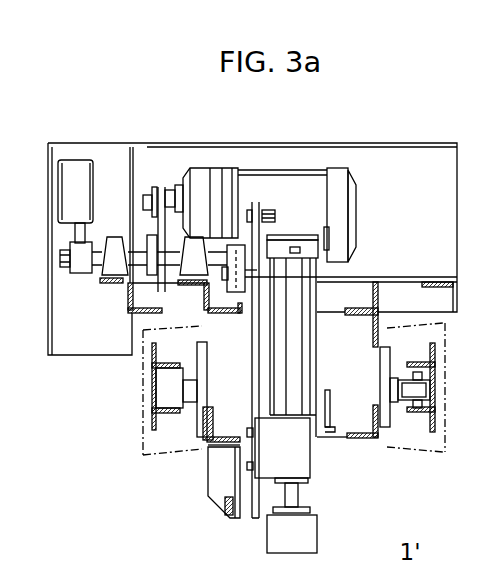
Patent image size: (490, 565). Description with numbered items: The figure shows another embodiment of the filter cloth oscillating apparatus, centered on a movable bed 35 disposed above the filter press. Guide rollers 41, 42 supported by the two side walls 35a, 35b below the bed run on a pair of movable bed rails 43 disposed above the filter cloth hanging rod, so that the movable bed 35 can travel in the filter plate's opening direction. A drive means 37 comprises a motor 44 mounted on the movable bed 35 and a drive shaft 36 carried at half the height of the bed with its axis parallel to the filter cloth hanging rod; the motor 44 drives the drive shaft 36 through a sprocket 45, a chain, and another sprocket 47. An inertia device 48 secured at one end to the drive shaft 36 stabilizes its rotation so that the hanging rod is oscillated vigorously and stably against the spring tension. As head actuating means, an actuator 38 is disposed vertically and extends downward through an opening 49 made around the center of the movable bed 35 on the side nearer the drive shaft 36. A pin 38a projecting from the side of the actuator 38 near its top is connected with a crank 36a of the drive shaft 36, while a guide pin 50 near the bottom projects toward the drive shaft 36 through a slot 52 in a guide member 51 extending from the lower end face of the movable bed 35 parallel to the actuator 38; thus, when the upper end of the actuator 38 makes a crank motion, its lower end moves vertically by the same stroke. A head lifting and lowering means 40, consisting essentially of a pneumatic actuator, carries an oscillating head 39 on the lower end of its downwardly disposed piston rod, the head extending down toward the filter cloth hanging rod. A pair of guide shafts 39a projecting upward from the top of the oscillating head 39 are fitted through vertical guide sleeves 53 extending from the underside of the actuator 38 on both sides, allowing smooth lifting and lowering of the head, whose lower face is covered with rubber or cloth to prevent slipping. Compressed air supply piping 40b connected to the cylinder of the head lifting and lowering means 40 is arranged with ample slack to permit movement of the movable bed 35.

The movable bed 35 is at (461, 240).
The side wall 35a is at (213, 418).
The side wall 35b is at (368, 433).
The drive shaft 36 is at (137, 253).
The crank 36a is at (237, 313).
The drive means 37 is at (108, 116).
The actuator 38 is at (253, 374).
The pin 38a is at (263, 257).
The oscillating head 39 is at (312, 544).
The guide shaft 39a is at (300, 498).
The head lifting and lowering means 40 is at (305, 346).
The compressed air supply piping 40b is at (330, 233).
The guide roller 41 is at (162, 380).
The guide roller 42 is at (432, 388).
The movable bed rail 43 is at (152, 415).
The motor 44 is at (198, 175).
The sprocket 45 is at (172, 187).
The sprocket 47 is at (155, 290).
The inertia device 48 is at (80, 168).
The opening 49 is at (348, 295).
The guide pin 50 is at (247, 510).
The guide member 51 is at (217, 488).
The slot 52 is at (230, 470).
The guide sleeve 53 is at (303, 458).